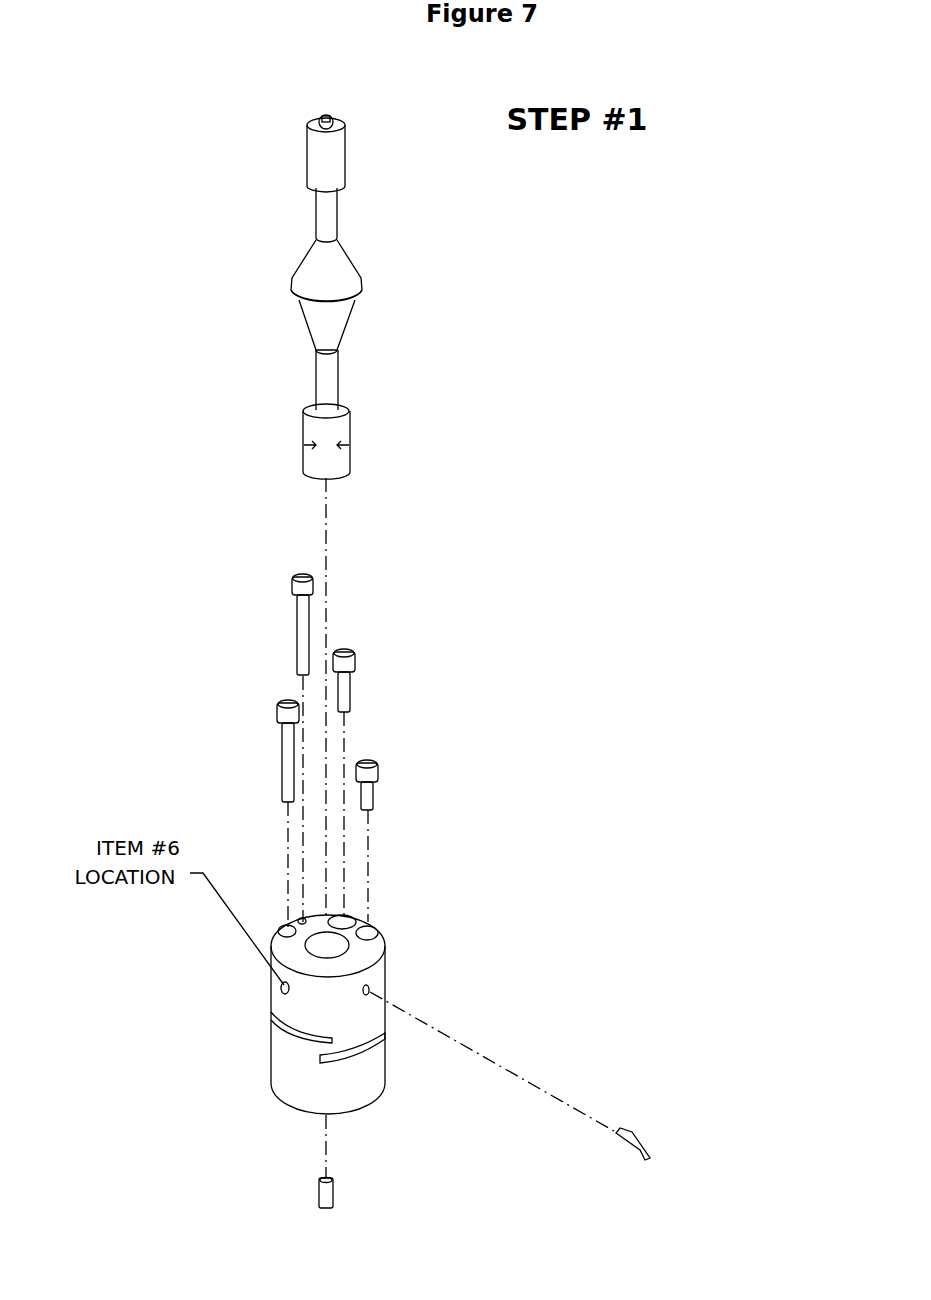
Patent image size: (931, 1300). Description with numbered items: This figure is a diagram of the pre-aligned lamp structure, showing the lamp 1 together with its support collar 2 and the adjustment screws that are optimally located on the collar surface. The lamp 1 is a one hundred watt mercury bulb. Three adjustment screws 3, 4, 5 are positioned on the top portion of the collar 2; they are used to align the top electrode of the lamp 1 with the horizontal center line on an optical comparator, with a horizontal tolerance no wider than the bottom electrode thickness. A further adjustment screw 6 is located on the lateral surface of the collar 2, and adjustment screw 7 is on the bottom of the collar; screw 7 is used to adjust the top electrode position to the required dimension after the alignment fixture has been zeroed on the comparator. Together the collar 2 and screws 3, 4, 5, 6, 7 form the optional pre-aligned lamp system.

The lamp 1 is at (368, 294).
The support collar 2 is at (393, 938).
The adjustment screw 3 is at (365, 658).
The adjustment screw 4 is at (308, 573).
The adjustment screw 5 is at (383, 769).
The adjustment screw 6 is at (658, 1132).
The adjustment screw 7 is at (316, 1183).